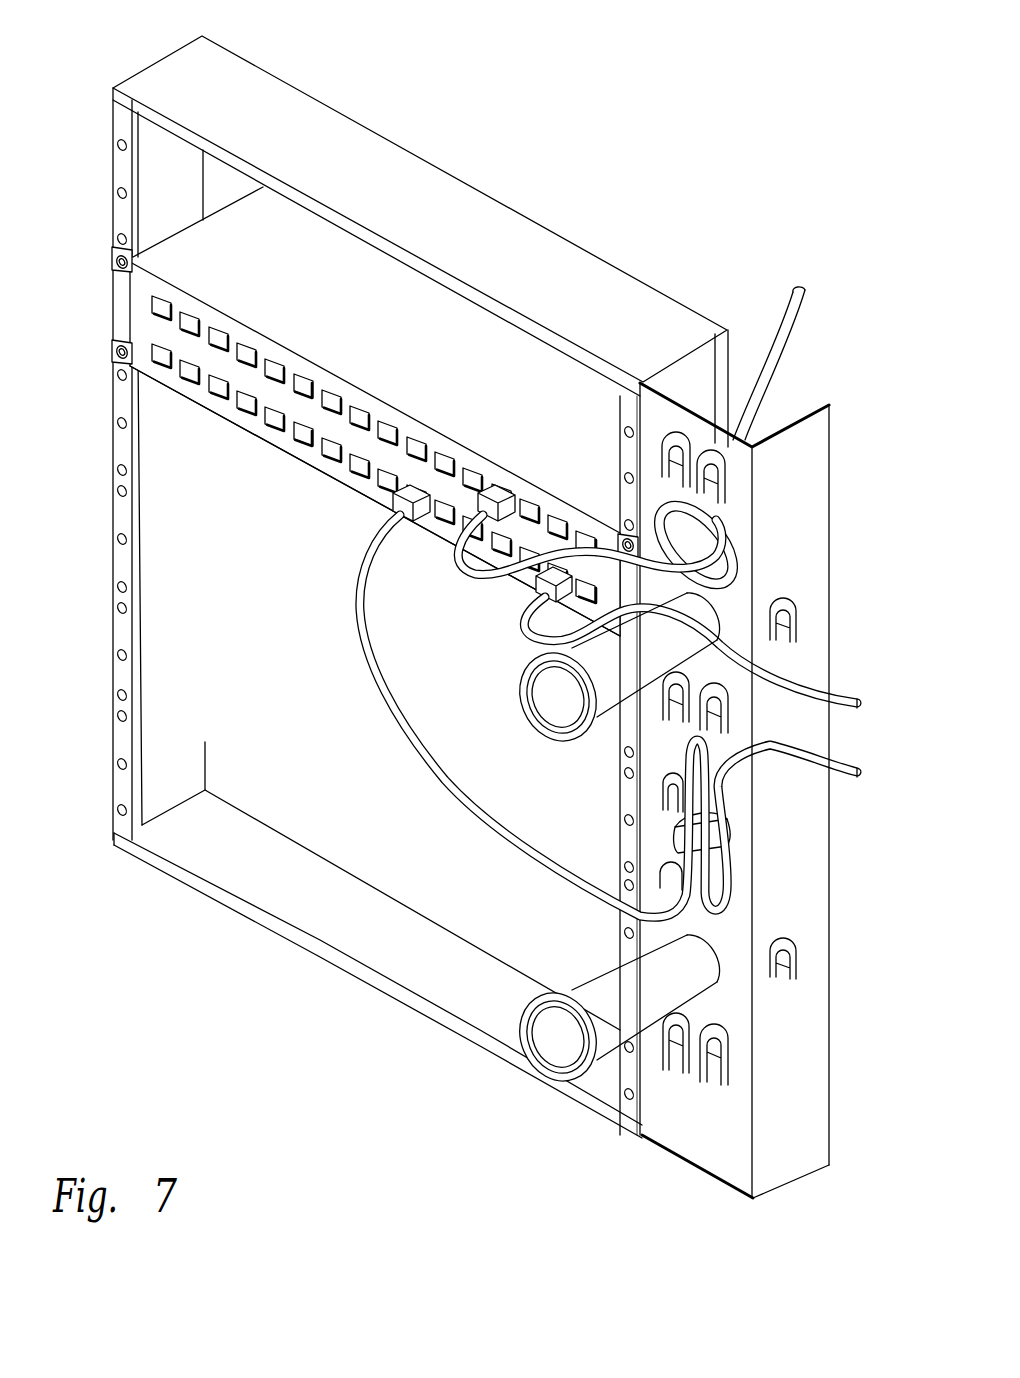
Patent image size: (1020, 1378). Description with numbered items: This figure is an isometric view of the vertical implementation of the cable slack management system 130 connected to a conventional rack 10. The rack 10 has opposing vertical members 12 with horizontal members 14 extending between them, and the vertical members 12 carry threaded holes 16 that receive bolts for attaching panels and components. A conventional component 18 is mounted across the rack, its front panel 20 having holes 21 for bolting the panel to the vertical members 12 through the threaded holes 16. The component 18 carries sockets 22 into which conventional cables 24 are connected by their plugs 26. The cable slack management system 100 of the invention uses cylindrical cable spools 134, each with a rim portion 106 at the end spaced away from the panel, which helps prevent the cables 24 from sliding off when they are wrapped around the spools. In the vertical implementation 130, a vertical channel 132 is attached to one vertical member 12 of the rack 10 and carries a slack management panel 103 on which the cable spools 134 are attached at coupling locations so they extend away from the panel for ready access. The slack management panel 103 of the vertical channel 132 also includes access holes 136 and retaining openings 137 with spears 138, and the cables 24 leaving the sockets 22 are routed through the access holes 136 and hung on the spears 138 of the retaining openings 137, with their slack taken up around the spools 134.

The rack 10 is at (512, 110).
The vertical members 12 is at (113, 130).
The horizontal members 14 is at (370, 152).
The threaded holes 16 is at (118, 193).
The component 18 is at (403, 328).
The front panel 20 is at (316, 458).
The holes 21 is at (113, 262).
The sockets 22 is at (155, 304).
The cables 24 is at (782, 336).
The plugs 26 is at (496, 486).
The cable slack management system 100 is at (567, 848).
The slack management panel 103 is at (693, 1130).
The rim portion 106 is at (516, 726).
The vertical implementation of the cable slack management system 130 is at (755, 681).
The vertical channel 132 is at (755, 800).
The cable spools 134 is at (598, 735).
The access holes 136 is at (740, 560).
The retaining openings 137 is at (725, 465).
The spears 138 is at (718, 487).